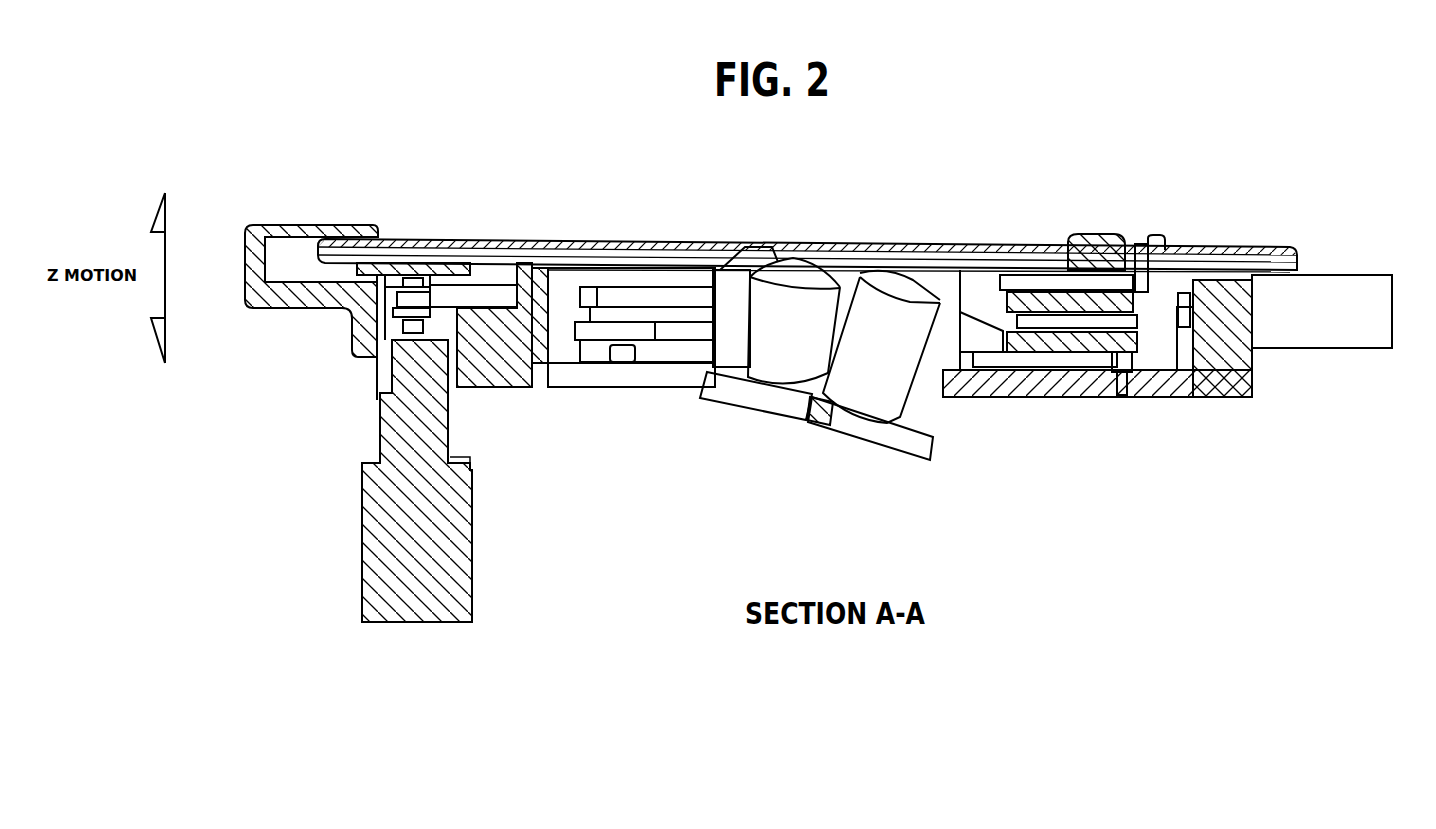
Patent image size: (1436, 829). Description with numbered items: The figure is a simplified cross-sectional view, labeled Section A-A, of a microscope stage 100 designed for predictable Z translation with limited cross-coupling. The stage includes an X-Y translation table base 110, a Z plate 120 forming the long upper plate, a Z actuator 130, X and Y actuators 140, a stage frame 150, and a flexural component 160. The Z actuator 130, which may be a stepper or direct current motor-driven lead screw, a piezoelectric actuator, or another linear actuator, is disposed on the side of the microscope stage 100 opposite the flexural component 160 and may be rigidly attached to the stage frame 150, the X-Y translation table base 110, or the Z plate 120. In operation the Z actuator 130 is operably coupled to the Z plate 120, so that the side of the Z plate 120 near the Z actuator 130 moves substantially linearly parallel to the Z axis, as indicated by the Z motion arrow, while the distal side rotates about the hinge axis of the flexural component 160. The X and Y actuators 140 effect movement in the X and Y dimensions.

The microscope stage 100 is at (816, 378).
The X-Y translation table base 110 is at (1085, 352).
The Z plate 120 is at (937, 243).
The Z actuator 130 is at (358, 522).
The X and Y actuators 140 is at (1338, 271).
The stage frame 150 is at (500, 375).
The flexural component 160 is at (1138, 238).